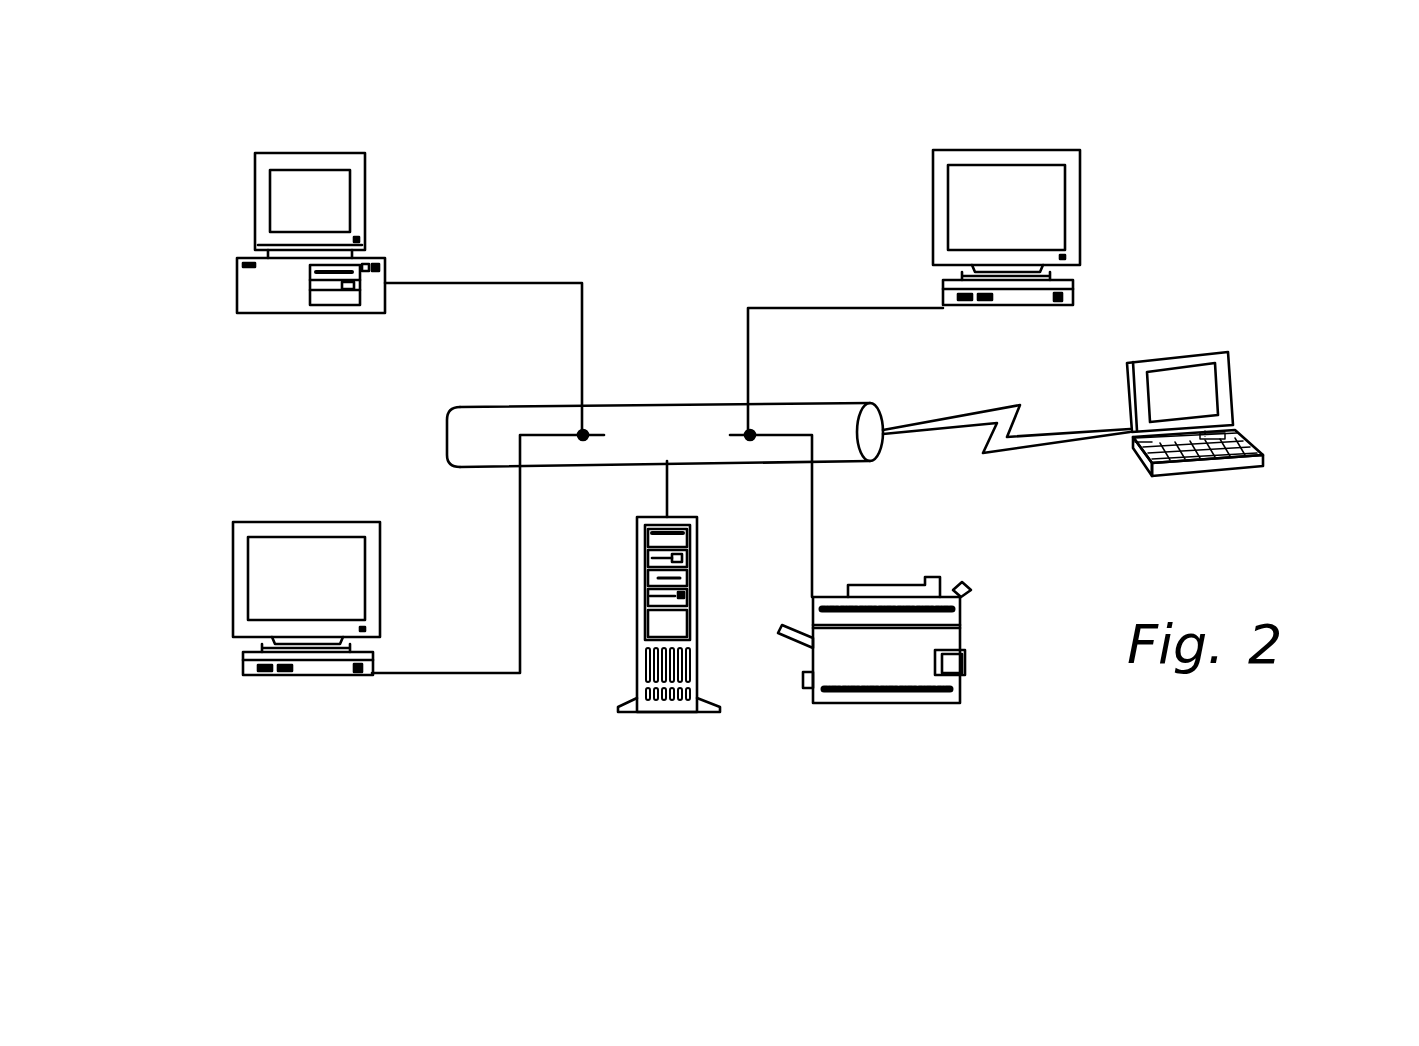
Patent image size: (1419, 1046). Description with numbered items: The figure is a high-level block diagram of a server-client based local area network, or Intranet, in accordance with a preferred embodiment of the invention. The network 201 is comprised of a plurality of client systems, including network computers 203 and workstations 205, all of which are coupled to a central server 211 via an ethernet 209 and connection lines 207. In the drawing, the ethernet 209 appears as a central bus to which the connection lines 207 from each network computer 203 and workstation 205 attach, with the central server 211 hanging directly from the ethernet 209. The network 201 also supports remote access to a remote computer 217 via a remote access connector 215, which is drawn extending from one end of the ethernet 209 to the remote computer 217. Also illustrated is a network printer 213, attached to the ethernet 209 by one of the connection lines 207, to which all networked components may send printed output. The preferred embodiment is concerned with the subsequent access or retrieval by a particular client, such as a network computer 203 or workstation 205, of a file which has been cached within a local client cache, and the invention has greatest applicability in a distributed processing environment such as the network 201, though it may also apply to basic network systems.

The network 201 is at (1272, 180).
The network computer 203 is at (255, 192).
The workstation 205 is at (1080, 185).
The connection line 207 is at (505, 242).
The ethernet 209 is at (650, 404).
The central server 211 is at (637, 547).
The network printer 213 is at (962, 637).
The remote access connector 215 is at (993, 457).
The remote computer 217 is at (1237, 388).